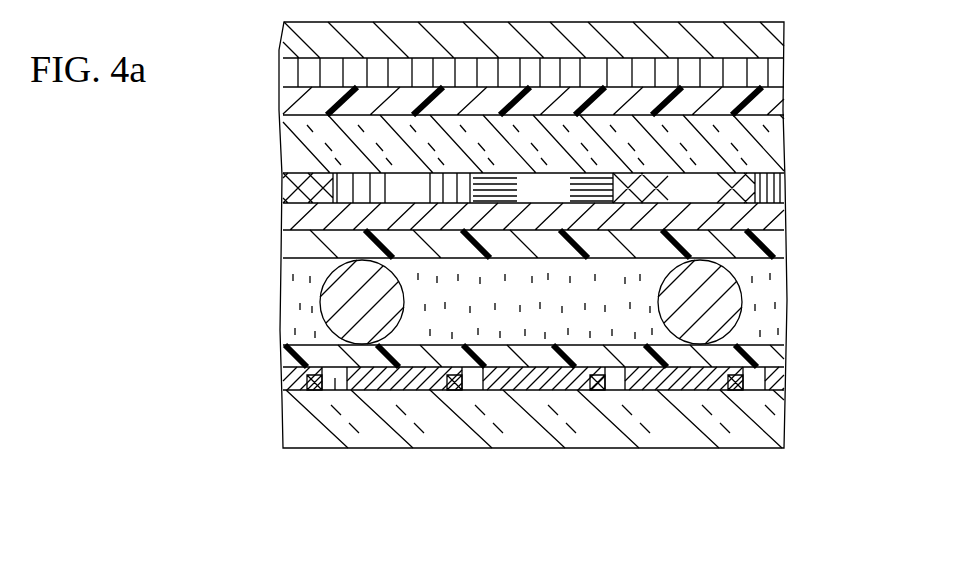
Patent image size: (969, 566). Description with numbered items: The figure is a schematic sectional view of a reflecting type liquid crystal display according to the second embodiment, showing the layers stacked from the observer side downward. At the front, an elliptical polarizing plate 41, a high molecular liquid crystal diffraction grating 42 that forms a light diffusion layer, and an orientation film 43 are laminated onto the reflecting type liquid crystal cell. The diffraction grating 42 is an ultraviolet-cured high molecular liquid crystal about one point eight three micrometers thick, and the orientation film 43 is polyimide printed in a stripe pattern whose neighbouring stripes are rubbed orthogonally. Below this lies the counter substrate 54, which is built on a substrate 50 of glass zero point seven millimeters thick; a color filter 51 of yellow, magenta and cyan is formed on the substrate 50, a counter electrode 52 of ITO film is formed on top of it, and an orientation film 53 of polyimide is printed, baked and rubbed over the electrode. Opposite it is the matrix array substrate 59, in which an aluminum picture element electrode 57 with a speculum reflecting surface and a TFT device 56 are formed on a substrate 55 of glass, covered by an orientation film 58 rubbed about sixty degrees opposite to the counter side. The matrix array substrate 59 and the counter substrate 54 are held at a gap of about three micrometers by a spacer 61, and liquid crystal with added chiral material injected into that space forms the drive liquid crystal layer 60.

The elliptical polarizing plate 41 is at (765, 40).
The high molecular liquid crystal diffraction grating 42 is at (772, 72).
The orientation film 43 is at (772, 107).
The substrate 50 is at (283, 150).
The color filter 51 is at (283, 193).
The counter electrode 52 is at (283, 218).
The orientation film 53 is at (498, 259).
The counter substrate 54 is at (443, 201).
The substrate 55 is at (432, 512).
The TFT device 56 is at (457, 390).
The aluminum picture element electrode 57 is at (383, 392).
The orientation film 58 is at (335, 392).
The matrix array substrate 59 is at (517, 454).
The drive liquid crystal layer 60 is at (564, 299).
The spacer 61 is at (740, 283).